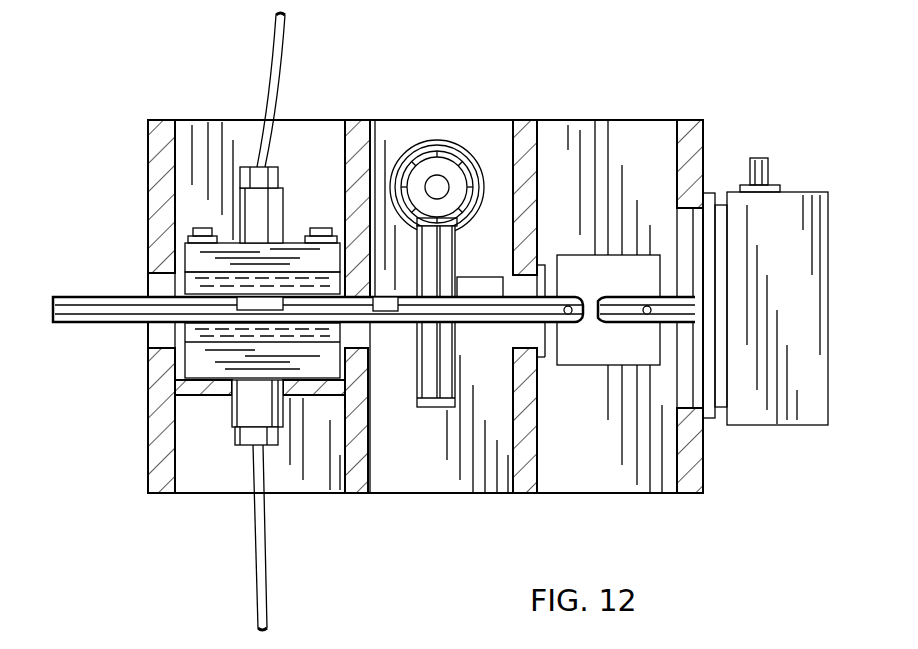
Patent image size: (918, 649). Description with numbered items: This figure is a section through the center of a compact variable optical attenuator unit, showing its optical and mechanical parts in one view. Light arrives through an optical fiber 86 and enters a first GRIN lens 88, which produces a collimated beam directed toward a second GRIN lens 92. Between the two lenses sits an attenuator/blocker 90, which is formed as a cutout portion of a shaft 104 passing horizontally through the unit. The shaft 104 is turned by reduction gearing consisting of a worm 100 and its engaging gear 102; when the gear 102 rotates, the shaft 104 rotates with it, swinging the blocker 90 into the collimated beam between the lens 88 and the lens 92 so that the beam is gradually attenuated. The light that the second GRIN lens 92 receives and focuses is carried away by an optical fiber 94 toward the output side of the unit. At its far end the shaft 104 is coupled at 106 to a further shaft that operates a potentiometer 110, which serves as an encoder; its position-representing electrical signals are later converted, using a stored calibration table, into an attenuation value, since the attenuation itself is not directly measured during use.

The optical fiber 86 is at (284, 55).
The attenuator/blocker 90 is at (262, 308).
The shaft 104 is at (105, 310).
The first GRIN lens 88 is at (200, 384).
The second GRIN lens 92 is at (187, 350).
The worm 100 is at (469, 339).
The gear 102 is at (432, 395).
The coupling 106 is at (578, 275).
The potentiometer 110 is at (773, 217).
The optical fiber 94 is at (264, 575).